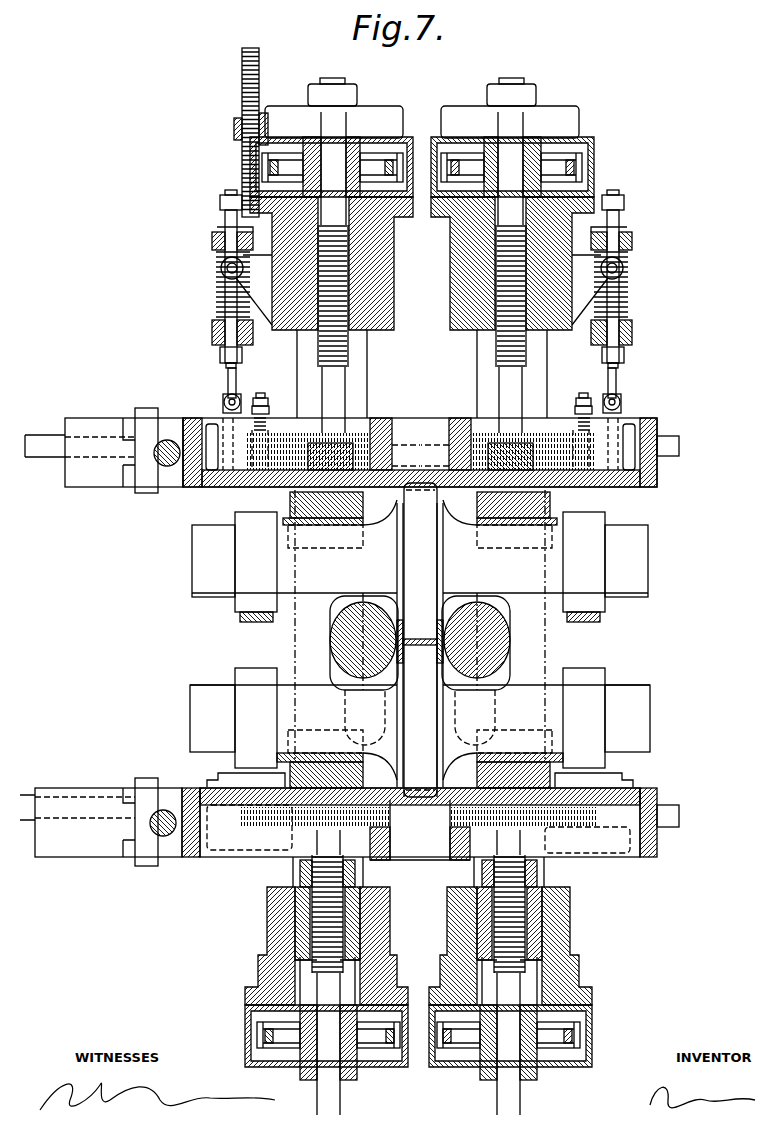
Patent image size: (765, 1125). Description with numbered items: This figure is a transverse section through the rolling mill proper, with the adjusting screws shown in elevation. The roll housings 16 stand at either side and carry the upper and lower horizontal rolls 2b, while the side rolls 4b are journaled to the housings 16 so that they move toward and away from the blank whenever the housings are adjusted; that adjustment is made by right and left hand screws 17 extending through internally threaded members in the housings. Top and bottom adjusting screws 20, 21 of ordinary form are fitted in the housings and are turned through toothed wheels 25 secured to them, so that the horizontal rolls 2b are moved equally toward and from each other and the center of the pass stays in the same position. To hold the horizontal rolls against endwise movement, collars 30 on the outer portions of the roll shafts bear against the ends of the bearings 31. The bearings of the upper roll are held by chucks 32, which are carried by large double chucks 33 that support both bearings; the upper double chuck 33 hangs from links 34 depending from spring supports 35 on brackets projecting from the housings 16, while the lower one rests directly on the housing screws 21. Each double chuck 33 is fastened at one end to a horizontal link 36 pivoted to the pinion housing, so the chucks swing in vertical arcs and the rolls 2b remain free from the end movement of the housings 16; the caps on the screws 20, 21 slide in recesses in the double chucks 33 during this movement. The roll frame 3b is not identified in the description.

The toothed wheel 25 is at (273, 166).
The top adjusting screw 20 is at (347, 351).
The roll housing 16 is at (357, 384).
The spring support 35 is at (222, 296).
The link 34 is at (228, 382).
The double chuck 33 is at (640, 426).
The right and left hand screw 17 is at (368, 420).
The horizontal link 36 is at (101, 478).
The collar 30 is at (420, 649).
The chuck 32 is at (420, 640).
The bearing 31 is at (512, 534).
The roll frame 3b is at (420, 638).
The horizontal roll 2b is at (420, 640).
The side roll 4b is at (340, 641).
The bottom adjusting screw 21 is at (350, 873).